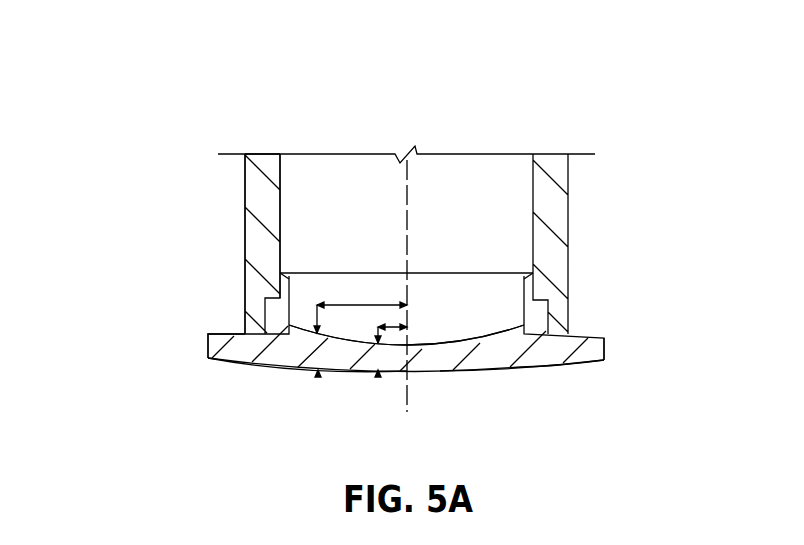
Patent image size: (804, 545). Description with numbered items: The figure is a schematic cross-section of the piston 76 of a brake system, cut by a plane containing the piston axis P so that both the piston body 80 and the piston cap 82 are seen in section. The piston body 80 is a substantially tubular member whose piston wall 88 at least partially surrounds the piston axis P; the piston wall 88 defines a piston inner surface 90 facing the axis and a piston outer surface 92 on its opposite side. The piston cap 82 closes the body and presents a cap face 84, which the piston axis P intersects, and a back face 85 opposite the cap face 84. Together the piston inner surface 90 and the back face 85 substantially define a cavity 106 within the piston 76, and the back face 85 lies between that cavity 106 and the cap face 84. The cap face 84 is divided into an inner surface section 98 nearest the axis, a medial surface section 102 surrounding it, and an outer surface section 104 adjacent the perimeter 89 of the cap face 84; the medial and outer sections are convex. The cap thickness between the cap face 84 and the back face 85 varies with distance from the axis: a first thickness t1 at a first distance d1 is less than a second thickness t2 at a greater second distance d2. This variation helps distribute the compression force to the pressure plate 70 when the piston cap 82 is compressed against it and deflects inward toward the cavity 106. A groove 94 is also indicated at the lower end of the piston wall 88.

The pressure plate 70 is at (393, 57).
The piston 76 is at (97, 152).
The piston body 80 is at (258, 285).
The piston cap 82 is at (247, 347).
The cap face 84 is at (291, 367).
The back face 85 is at (443, 340).
The piston wall 88 is at (267, 160).
The perimeter 89 is at (605, 360).
The piston inner surface 90 is at (282, 156).
The piston outer surface 92 is at (243, 156).
The groove 94 is at (552, 333).
The inner surface section 98 is at (424, 372).
The medial surface section 102 is at (482, 372).
The outer surface section 104 is at (557, 370).
The cavity 106 is at (438, 287).
The piston axis P is at (408, 183).
The first distance d1 is at (390, 326).
The second distance d2 is at (381, 303).
The first thickness t1 is at (376, 374).
The second thickness t2 is at (316, 373).